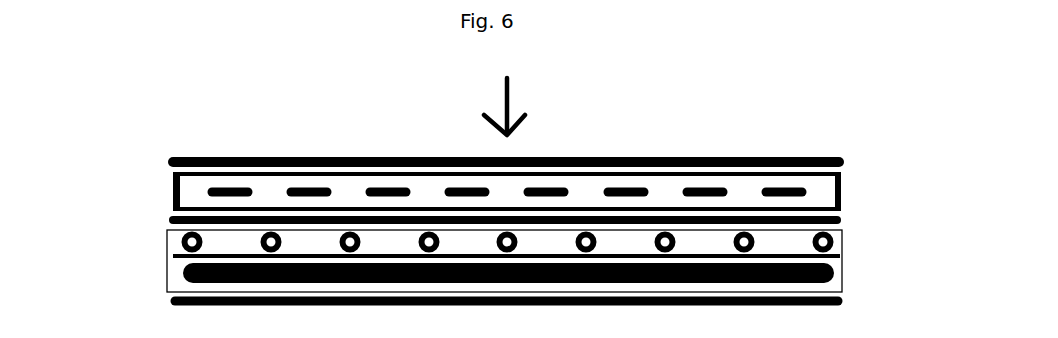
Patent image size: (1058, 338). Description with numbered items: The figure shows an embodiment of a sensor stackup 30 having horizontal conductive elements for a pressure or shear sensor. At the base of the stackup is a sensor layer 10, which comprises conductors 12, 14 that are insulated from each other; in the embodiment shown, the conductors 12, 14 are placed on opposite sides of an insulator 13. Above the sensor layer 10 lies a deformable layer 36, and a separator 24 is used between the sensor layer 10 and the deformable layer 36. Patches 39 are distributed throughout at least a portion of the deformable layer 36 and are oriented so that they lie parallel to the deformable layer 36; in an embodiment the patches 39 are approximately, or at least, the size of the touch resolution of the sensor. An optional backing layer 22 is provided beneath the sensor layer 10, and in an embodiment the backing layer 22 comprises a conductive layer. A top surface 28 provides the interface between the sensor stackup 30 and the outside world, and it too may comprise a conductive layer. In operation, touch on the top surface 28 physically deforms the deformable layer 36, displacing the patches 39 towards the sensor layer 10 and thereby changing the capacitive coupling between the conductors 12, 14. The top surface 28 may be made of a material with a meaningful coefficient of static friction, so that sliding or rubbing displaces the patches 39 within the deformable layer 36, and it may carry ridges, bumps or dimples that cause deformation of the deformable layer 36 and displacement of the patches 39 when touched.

The sensor layer 10 is at (842, 265).
The conductor 12 is at (181, 240).
The insulator 13 is at (173, 256).
The conductor 14 is at (182, 275).
The backing layer 22 is at (843, 301).
The separator 24 is at (841, 216).
The top surface 28 is at (843, 158).
The sensor stackup 30 is at (504, 90).
The deformable layer 36 is at (841, 185).
The patches 39 is at (212, 189).